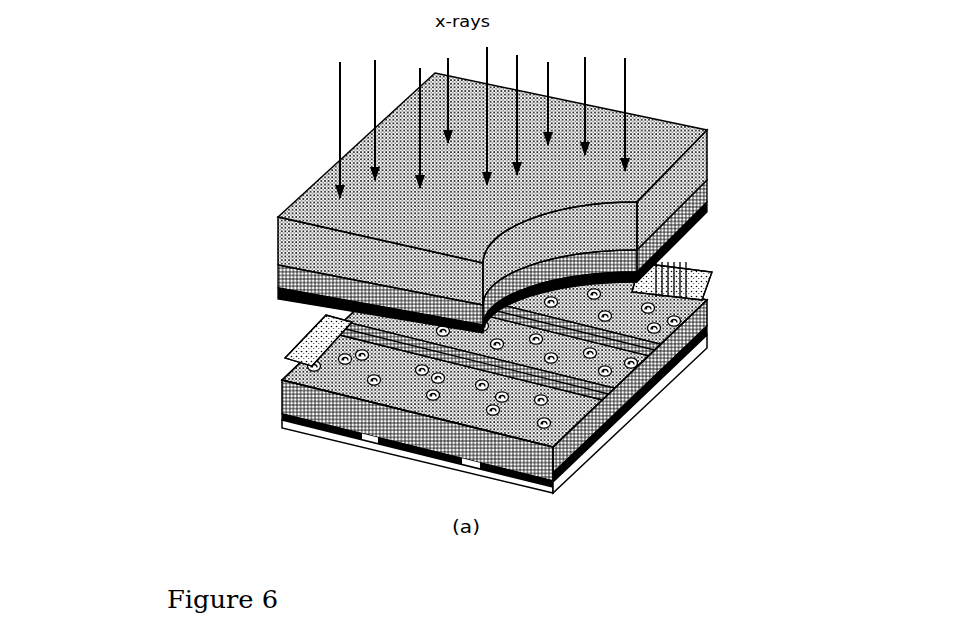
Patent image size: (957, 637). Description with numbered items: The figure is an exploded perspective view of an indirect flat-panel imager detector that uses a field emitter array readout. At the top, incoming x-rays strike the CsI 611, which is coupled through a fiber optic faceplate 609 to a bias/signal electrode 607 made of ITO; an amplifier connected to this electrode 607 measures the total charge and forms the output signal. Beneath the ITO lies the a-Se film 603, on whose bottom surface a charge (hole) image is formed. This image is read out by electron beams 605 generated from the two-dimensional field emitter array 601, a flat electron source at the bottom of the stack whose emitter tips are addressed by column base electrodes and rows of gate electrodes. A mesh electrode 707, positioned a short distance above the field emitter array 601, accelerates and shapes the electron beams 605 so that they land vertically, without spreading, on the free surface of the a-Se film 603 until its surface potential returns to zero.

The field emitter array (FEA) 601 is at (558, 422).
The a-Se film 603 is at (282, 297).
The electron beams 605 is at (680, 256).
The bias/signal electrode (ITO) 607 is at (708, 208).
The fiber optic faceplate 609 is at (712, 183).
The CsI 611 is at (276, 247).
The mesh electrode 707 is at (706, 287).